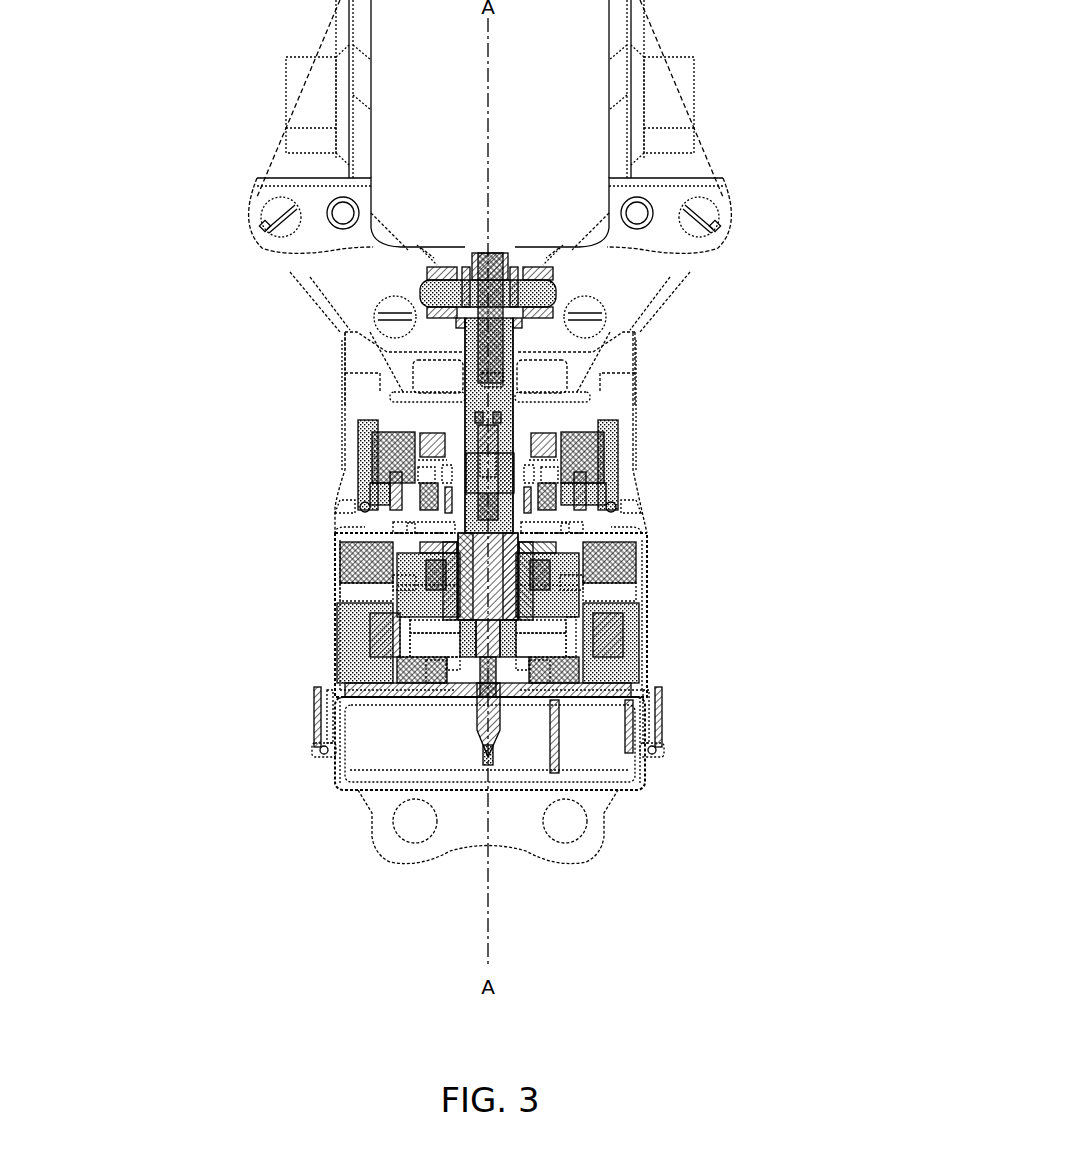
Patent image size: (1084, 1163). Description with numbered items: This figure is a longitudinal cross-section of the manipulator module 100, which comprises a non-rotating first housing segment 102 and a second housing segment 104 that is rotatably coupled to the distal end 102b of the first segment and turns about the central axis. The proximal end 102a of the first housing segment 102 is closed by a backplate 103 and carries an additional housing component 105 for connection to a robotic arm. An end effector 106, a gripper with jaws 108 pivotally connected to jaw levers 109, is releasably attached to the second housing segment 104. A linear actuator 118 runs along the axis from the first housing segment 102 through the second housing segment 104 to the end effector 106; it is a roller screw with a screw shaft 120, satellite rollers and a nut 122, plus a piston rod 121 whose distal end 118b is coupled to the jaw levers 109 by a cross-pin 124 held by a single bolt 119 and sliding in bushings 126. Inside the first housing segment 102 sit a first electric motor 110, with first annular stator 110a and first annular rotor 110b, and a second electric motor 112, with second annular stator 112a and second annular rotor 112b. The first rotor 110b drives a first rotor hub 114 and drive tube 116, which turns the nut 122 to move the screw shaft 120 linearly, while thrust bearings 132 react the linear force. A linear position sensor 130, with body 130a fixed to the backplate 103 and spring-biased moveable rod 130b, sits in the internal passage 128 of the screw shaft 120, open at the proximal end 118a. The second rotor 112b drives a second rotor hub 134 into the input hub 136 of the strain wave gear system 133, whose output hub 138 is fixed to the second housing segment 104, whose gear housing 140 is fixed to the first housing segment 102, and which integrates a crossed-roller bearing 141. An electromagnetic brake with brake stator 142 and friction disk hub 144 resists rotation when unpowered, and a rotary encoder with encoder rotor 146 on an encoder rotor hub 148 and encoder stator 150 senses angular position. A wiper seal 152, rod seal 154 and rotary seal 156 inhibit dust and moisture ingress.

The manipulator module 100 is at (846, 398).
The first housing segment 102 is at (660, 666).
The proximal end of the first housing segment 102a is at (317, 742).
The distal end of the first housing segment 102b is at (380, 496).
The backplate 103 is at (377, 693).
The second housing segment 104 is at (633, 462).
The additional housing component 105 is at (645, 790).
The end effector 106 is at (828, 123).
The jaws 108 is at (314, 88).
The jaw levers 109 is at (377, 235).
The first electric motor 110 is at (640, 620).
The first annular stator 110a is at (380, 631).
The first annular rotor 110b is at (380, 648).
The second electric motor 112 is at (640, 545).
The second annular stator 112a is at (440, 555).
The second annular rotor 112b is at (430, 562).
The first rotor hub 114 is at (400, 626).
The drive tube 116 is at (440, 572).
The linear actuator 118 is at (500, 432).
The proximal end of the linear actuator 118a is at (480, 645).
The distal end of the linear actuator 118b is at (505, 330).
The bolt 119 is at (497, 303).
The screw shaft 120 is at (628, 568).
The piston rod 121 is at (528, 357).
The nut 122 is at (580, 582).
The cross-pin 124 is at (462, 295).
The bushings 126 is at (437, 272).
The internal passage 128 is at (565, 474).
The linear position sensor 130 is at (490, 705).
The body 130a is at (520, 555).
The moveable rod 130b is at (522, 456).
The thrust bearings 132 is at (395, 434).
The strain wave gear system 133 is at (412, 447).
The second rotor hub 134 is at (420, 530).
The input hub 136 is at (420, 486).
The output hub 138 is at (405, 466).
The gear housing 140 is at (403, 465).
The crossed-roller bearing 141 is at (633, 461).
The brake stator 142 is at (380, 585).
The friction disk hub 144 is at (545, 575).
The encoder rotor 146 is at (430, 647).
The encoder rotor hub 148 is at (470, 648).
The encoder stator 150 is at (560, 670).
The wiper seal 152 is at (528, 372).
The rod seal 154 is at (522, 405).
The rotary seal 156 is at (613, 507).